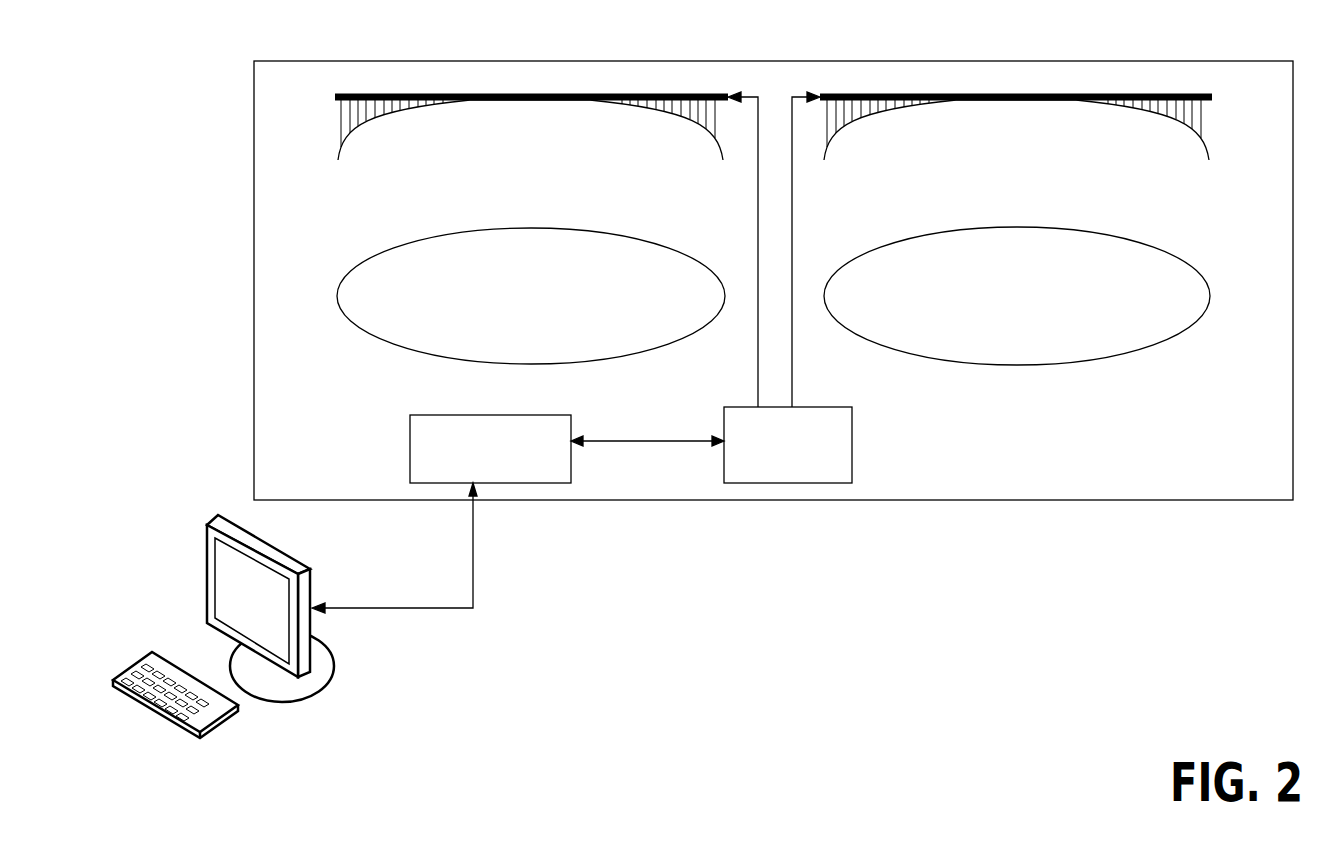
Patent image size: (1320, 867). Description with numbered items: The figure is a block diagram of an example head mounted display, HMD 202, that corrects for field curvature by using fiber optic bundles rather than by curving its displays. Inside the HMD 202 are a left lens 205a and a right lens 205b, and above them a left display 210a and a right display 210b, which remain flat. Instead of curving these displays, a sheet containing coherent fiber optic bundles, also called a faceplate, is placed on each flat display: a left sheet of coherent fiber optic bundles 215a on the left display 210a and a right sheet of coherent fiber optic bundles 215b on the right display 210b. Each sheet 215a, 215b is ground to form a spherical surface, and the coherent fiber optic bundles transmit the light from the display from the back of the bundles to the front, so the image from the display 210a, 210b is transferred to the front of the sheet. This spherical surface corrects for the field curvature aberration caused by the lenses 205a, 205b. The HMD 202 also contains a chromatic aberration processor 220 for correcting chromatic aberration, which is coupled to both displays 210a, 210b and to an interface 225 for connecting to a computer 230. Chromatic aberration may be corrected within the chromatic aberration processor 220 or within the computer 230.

The head mounted display 202 is at (1178, 60).
The left lens 205a is at (675, 255).
The right lens 205b is at (1211, 290).
The left display 210a is at (726, 94).
The right display 210b is at (1214, 98).
The sheet of coherent fiber optic bundles 215a is at (363, 125).
The sheet of coherent fiber optic bundles 215b is at (865, 125).
The chromatic aberration processor 220 is at (853, 432).
The interface 225 is at (571, 419).
The computer 230 is at (332, 682).